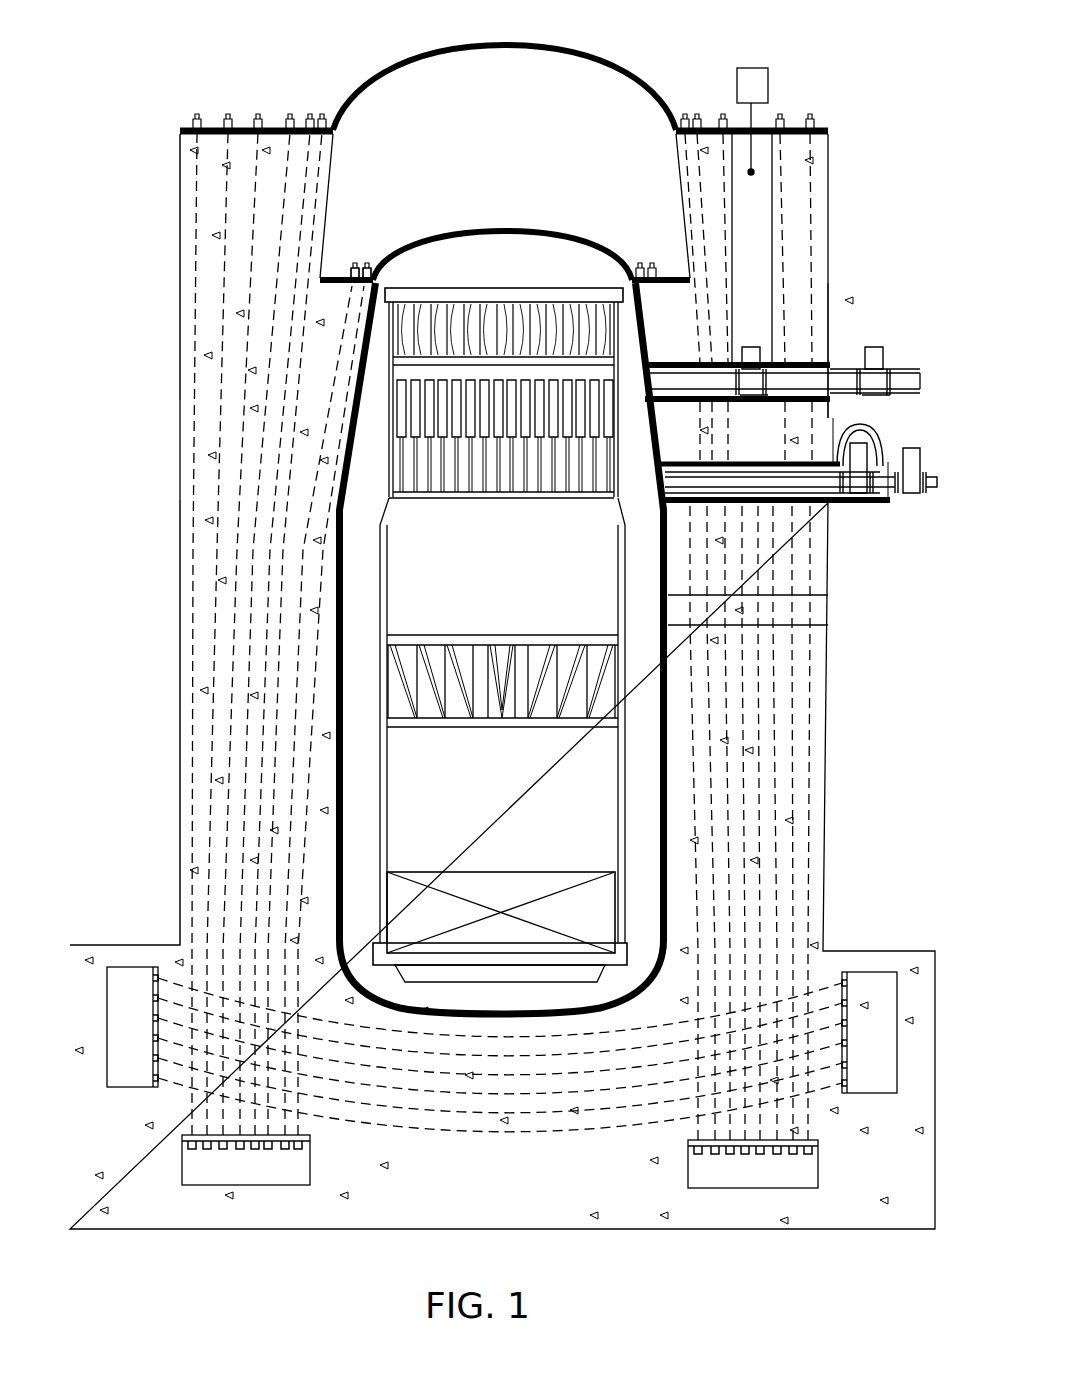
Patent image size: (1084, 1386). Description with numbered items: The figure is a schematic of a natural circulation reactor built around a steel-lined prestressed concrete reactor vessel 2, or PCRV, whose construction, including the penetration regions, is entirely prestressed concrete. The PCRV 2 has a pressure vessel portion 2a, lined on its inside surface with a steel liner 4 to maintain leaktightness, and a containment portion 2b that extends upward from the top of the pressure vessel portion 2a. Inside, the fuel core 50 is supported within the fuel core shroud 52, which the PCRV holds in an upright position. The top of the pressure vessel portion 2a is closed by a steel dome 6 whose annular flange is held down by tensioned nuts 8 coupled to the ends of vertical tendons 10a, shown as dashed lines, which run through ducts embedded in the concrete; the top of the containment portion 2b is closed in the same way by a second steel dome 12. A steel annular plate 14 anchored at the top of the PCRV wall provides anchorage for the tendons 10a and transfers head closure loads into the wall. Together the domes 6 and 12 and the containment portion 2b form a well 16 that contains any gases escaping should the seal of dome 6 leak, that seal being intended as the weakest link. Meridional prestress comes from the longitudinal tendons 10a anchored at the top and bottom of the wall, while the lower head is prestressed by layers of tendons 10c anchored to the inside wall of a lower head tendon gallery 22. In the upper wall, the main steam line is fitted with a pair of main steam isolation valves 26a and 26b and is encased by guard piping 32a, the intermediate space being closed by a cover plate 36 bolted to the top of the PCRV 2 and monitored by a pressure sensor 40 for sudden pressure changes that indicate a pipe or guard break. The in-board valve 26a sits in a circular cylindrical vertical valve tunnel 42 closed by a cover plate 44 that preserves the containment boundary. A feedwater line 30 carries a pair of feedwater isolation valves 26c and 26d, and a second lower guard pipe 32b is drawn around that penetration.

The prestressed concrete reactor vessel 2 is at (175, 405).
The pressure vessel portion 2a is at (178, 506).
The containment portion 2b is at (178, 192).
The steel liner 4 is at (343, 640).
The steel dome 6 is at (502, 228).
The tensioned nuts 8 is at (360, 266).
The vertical tendons 10a is at (290, 190).
The lower head tendons 10c is at (500, 1135).
The steel dome 12 is at (425, 48).
The steel annular plate 14 is at (212, 126).
The well 16 is at (512, 100).
The lower head tendon gallery 22 is at (140, 985).
The in-board main steam isolation valve 26a is at (752, 345).
The main steam isolation valve 26b is at (878, 345).
The feedwater isolation valve 26c is at (846, 440).
The feedwater isolation valve 26d is at (915, 447).
The feedwater line 30 is at (823, 496).
The guard piping 32a is at (790, 365).
The lower pipe 32b is at (840, 480).
The cover plate 36 is at (838, 360).
The pressure sensor 40 is at (736, 84).
The valve tunnel 42 is at (750, 232).
The cover plate 44 is at (757, 128).
The fuel core 50 is at (486, 870).
The fuel core shroud 52 is at (381, 778).